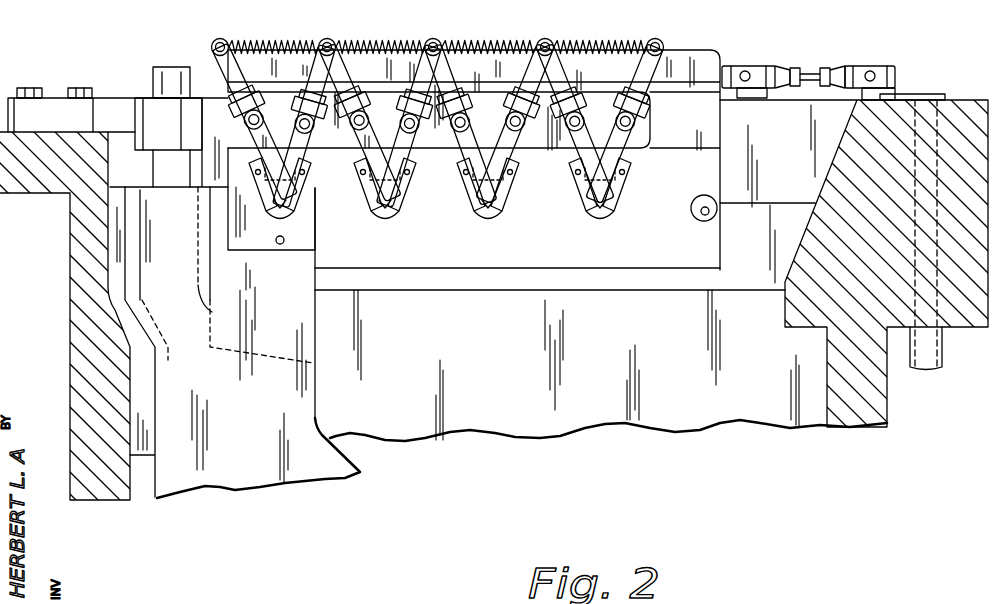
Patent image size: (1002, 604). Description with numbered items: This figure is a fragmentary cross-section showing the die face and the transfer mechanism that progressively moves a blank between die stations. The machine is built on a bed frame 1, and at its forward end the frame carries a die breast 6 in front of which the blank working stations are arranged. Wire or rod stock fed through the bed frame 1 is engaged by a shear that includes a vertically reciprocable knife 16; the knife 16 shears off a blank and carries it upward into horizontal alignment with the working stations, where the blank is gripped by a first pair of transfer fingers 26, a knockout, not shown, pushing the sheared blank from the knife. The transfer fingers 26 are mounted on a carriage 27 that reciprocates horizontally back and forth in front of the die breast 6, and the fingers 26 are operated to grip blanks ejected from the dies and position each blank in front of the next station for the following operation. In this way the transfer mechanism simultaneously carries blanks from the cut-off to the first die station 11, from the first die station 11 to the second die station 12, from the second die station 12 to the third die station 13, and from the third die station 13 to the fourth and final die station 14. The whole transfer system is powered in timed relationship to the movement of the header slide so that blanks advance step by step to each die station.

The bed frame 1 is at (785, 306).
The die breast 6 is at (527, 270).
The first die station 11 is at (386, 222).
The second die station 12 is at (489, 222).
The third die station 13 is at (603, 222).
The fourth and final die station 14 is at (696, 221).
The vertically reciprocable knife 16 is at (304, 228).
The transfer fingers 26 is at (522, 141).
The carriage 27 is at (765, 106).